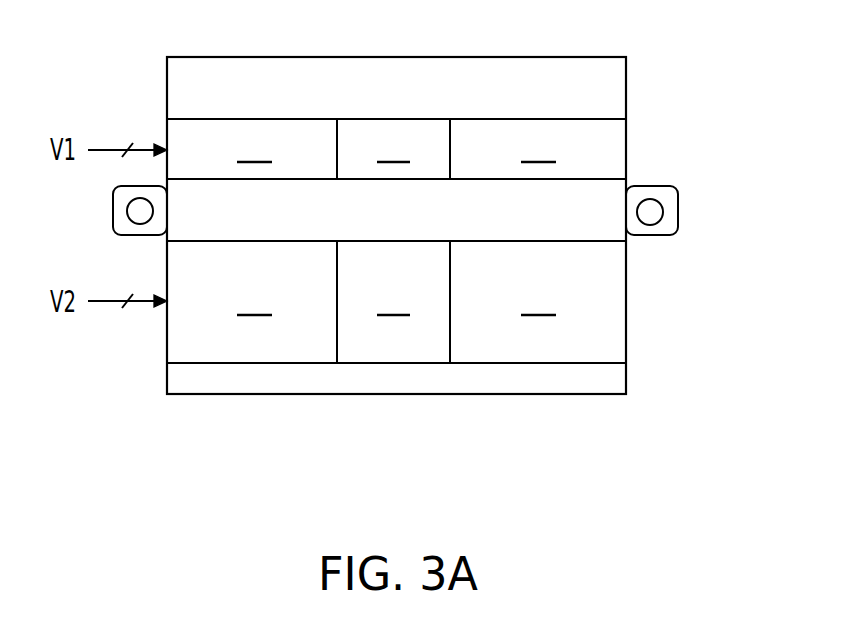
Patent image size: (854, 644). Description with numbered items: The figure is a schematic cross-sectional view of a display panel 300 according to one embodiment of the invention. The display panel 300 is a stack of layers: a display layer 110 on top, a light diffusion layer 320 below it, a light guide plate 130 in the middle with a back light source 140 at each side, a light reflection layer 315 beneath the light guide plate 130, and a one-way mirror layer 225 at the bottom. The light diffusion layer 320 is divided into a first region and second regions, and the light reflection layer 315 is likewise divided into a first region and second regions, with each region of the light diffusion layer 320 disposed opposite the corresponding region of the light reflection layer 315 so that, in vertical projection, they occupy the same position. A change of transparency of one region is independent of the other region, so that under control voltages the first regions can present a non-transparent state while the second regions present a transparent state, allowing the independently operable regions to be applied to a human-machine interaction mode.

The display layer 110 is at (598, 87).
The light diffusion layer 320 is at (638, 119).
The light guide plate 130 is at (207, 228).
The back light source 140 is at (140, 211).
The light reflection layer 315 is at (638, 241).
The one-way mirror layer 225 is at (598, 380).
The display panel 300 is at (397, 266).